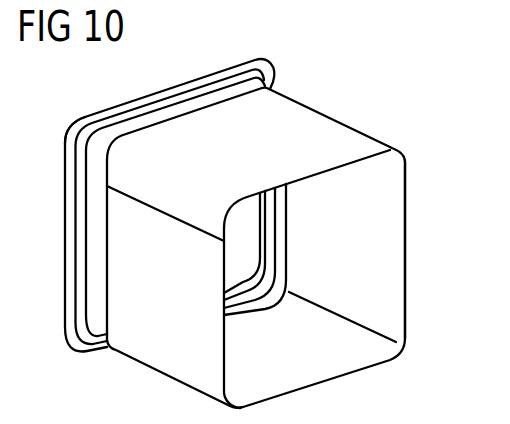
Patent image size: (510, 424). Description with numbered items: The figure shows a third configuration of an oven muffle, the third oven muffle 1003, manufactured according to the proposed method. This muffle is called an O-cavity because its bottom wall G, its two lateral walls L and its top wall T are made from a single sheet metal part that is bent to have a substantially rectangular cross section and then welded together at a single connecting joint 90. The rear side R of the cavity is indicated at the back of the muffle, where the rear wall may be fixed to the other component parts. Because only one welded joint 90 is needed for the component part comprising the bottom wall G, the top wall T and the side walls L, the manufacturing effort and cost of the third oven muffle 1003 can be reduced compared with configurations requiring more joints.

The third oven muffle 1003 is at (393, 115).
The connecting joint 90 is at (213, 75).
The rear side R is at (71, 126).
The top side T is at (313, 152).
The lateral side L is at (407, 254).
The bottom side G is at (318, 385).